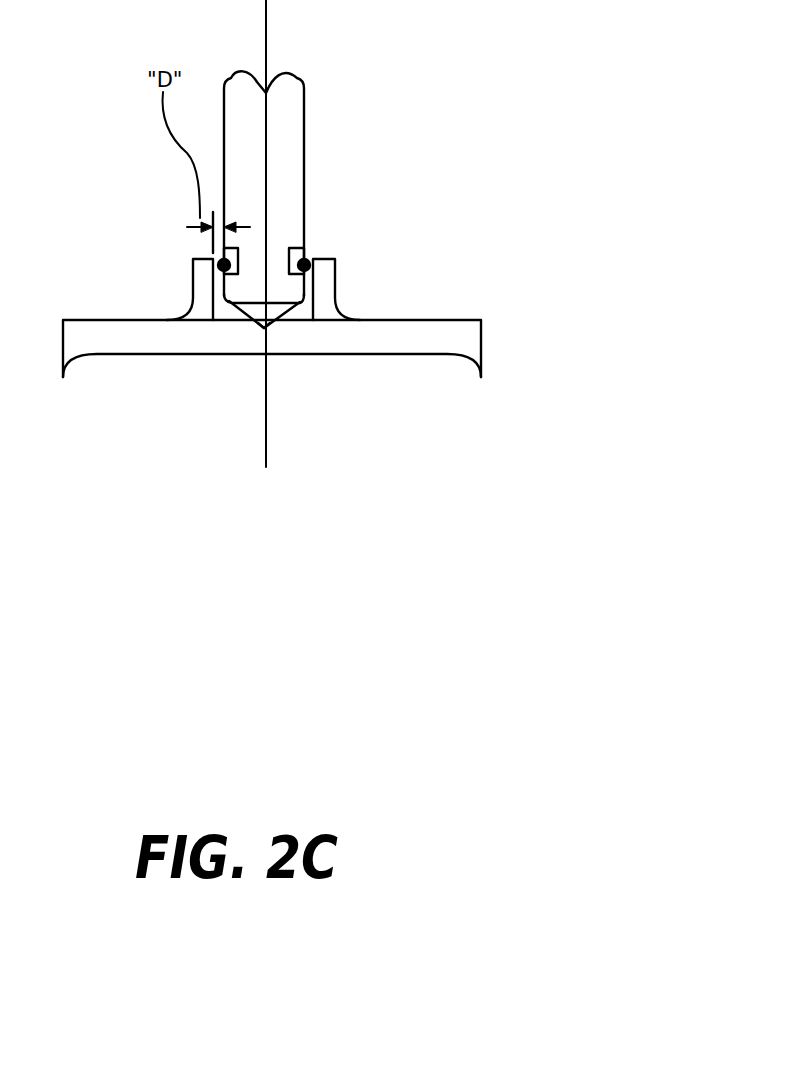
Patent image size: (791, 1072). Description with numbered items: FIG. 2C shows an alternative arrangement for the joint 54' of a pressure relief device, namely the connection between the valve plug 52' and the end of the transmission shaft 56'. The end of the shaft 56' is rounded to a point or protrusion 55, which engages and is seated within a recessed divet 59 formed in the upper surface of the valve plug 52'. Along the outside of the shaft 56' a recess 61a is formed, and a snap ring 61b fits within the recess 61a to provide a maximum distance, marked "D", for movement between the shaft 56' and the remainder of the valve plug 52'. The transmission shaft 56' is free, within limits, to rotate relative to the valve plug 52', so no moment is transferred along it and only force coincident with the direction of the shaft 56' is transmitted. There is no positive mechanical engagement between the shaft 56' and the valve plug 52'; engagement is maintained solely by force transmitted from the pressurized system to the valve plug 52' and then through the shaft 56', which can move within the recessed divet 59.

The valve plug 52' is at (272, 394).
The joint 54' is at (193, 233).
The point or protrusion 55 is at (276, 312).
The transmission shaft 56' is at (327, 183).
The recessed divet 59 is at (263, 328).
The recess 61a is at (303, 260).
The snap ring 61b is at (305, 262).